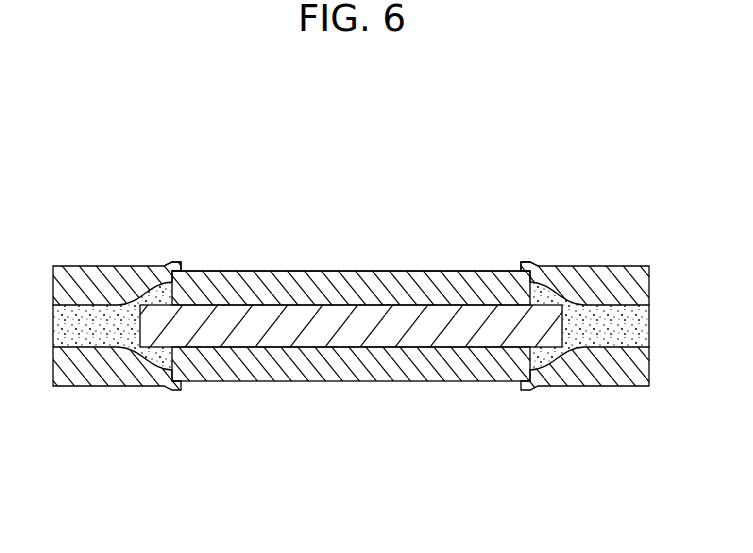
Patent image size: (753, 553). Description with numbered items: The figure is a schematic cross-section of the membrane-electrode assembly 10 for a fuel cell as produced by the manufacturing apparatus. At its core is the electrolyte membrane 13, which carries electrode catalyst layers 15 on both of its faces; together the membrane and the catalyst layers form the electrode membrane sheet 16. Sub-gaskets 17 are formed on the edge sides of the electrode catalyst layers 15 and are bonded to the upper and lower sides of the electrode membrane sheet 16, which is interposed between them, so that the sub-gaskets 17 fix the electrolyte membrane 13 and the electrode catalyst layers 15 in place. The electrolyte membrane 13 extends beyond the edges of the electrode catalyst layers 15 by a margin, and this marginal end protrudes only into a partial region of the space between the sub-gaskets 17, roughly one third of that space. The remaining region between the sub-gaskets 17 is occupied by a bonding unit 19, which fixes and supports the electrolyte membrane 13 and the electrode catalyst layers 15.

The membrane-electrode assembly 10 is at (360, 165).
The electrolyte membrane 13 is at (258, 330).
The electrode catalyst layers 15 is at (354, 271).
The electrode membrane sheet 16 is at (249, 257).
The sub-gaskets 17 is at (598, 282).
The bonding unit 19 is at (640, 326).